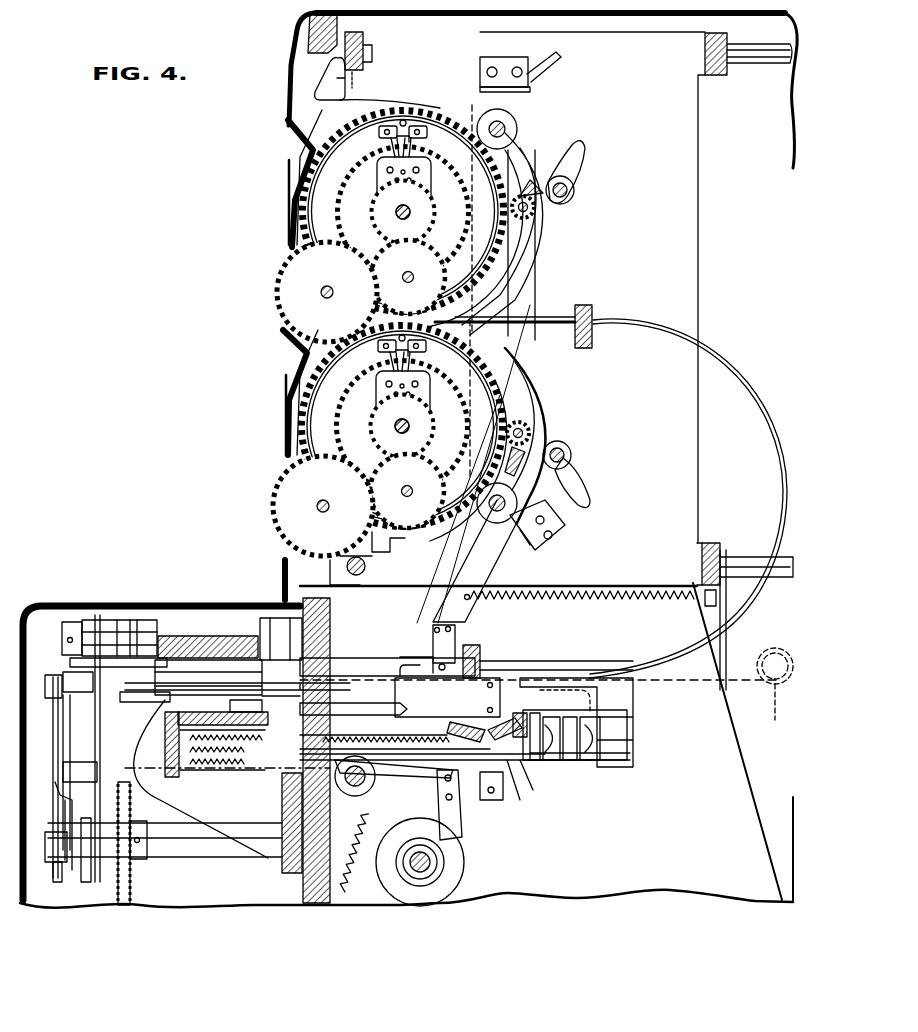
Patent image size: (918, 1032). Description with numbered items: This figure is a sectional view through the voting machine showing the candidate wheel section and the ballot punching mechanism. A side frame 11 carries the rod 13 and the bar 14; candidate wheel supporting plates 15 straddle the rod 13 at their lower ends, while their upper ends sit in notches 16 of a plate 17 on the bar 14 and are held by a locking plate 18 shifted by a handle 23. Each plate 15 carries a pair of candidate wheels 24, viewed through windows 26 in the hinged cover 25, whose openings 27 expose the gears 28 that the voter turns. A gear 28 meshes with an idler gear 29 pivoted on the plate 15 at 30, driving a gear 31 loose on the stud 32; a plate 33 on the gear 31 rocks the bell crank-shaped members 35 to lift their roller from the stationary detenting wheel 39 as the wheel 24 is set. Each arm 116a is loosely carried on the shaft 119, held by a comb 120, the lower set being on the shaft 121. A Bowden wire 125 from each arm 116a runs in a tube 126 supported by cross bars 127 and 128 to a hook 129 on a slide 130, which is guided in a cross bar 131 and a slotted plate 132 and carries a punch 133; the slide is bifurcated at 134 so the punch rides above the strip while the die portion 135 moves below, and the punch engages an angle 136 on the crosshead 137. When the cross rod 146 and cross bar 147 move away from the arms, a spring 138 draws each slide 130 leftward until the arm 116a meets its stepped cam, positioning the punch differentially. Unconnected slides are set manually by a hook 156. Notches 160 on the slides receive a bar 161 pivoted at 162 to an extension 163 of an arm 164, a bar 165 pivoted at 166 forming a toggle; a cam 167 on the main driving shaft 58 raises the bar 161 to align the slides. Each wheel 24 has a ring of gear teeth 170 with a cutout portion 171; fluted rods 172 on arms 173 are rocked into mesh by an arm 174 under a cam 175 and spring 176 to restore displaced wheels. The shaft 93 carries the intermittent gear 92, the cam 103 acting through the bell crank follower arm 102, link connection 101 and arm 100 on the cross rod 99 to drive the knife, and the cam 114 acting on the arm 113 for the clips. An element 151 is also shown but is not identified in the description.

The side frame 11 is at (300, 587).
The rod 13 is at (356, 578).
The bar 14 is at (366, 32).
The candidate wheel supporting plate 15 is at (340, 100).
The notches 16 is at (127, 712).
The plate 17 is at (330, 42).
The locking plate 18 is at (373, 54).
The handle 23 is at (318, 76).
The candidate wheel 24 is at (297, 202).
The hinged cover 25 is at (297, 232).
The windows 26 is at (288, 172).
The openings 27 is at (292, 262).
The gear 28 is at (300, 298).
The idler gear 29 is at (420, 252).
The pivot 30 is at (405, 275).
The gear 31 is at (422, 200).
The stud 32 is at (396, 212).
The plate 33 is at (392, 176).
The bell crank-shaped members 35 is at (382, 132).
The detenting wheel 39 is at (470, 232).
The main driving shaft 58 is at (412, 872).
The intermittent gear 92 is at (124, 908).
The shaft 93 is at (170, 848).
The cross rod 99 is at (62, 625).
The arm 100 is at (97, 615).
The link connection 101 is at (60, 712).
The bell crank follower arm 102 is at (66, 800).
The cam 103 is at (86, 882).
The arm 113 is at (58, 727).
The cam 114 is at (56, 882).
The arm 116a is at (545, 232).
The shaft 119 is at (508, 128).
The comb 120 is at (532, 96).
The shaft 121 is at (517, 506).
The Bowden wire 125 is at (515, 302).
The tube 126 is at (768, 428).
The cross bar 127 is at (594, 318).
The cross bar 128 is at (482, 650).
The hook 129 is at (412, 662).
The slide 130 is at (345, 668).
The cross bar 131 is at (535, 668).
The slotted plate 132 is at (268, 738).
The punch 133 is at (225, 664).
The bifurcation 134 is at (340, 688).
The die portion 135 is at (235, 697).
The angle 136 is at (185, 650).
The crosshead 137 is at (222, 650).
The spring 138 is at (210, 775).
The cross rod 146 is at (566, 453).
The cross bar 147 is at (568, 190).
The rod 151 is at (160, 640).
The hook 156 is at (769, 692).
The notches 160 is at (560, 745).
The bar 161 is at (522, 790).
The pivot 162 is at (445, 775).
The extension 163 is at (503, 800).
The arm 164 is at (466, 800).
The bar 165 is at (473, 725).
The pivot 166 is at (450, 727).
The cam 167 is at (432, 880).
The ring of gear teeth 170 is at (505, 252).
The cutout portion 171 is at (512, 207).
The fluted rod 172 is at (537, 210).
The arm 173 is at (560, 178).
The arm 174 is at (480, 565).
The cam 175 is at (455, 885).
The spring 176 is at (580, 596).